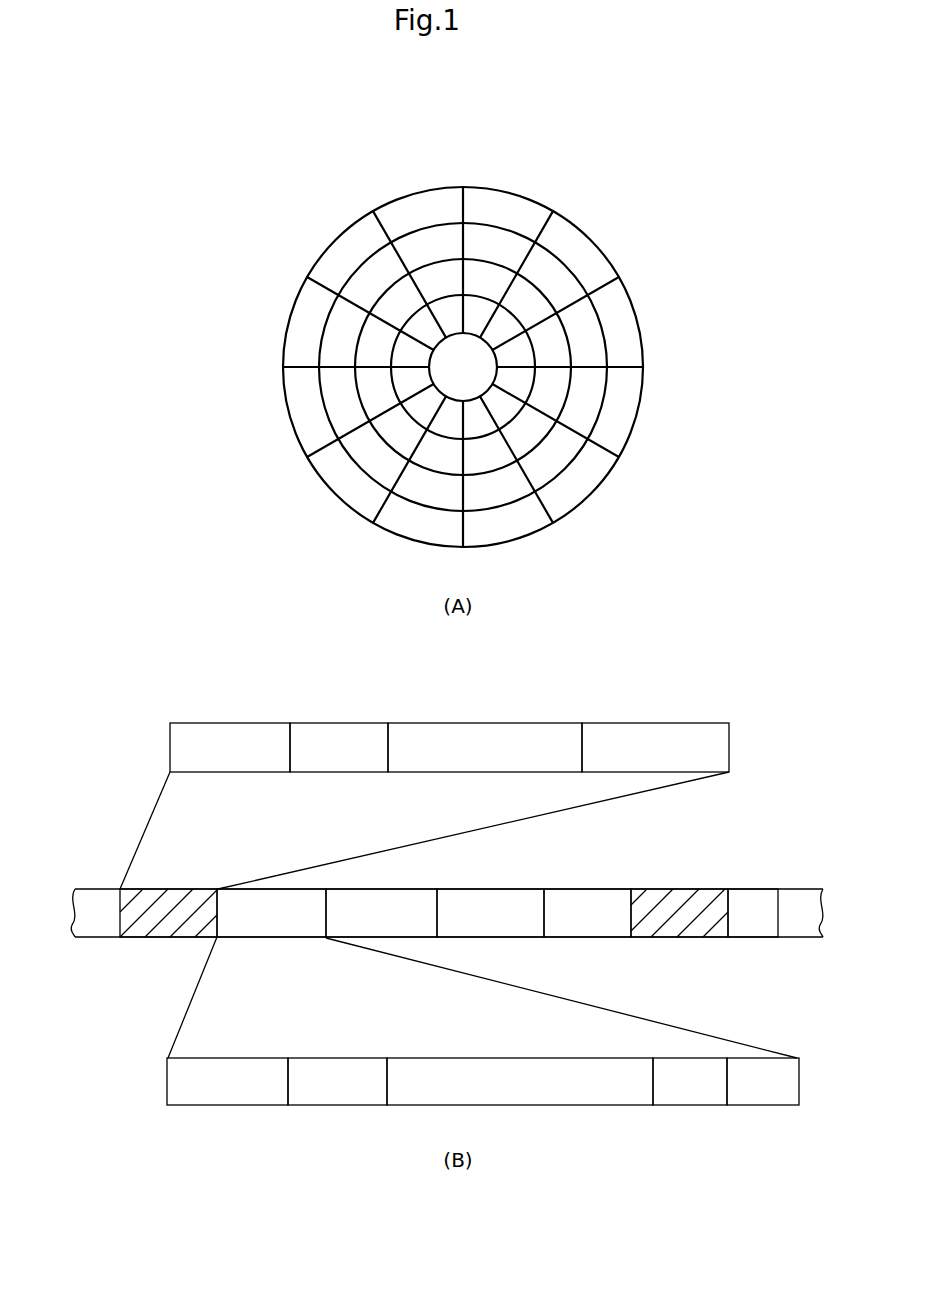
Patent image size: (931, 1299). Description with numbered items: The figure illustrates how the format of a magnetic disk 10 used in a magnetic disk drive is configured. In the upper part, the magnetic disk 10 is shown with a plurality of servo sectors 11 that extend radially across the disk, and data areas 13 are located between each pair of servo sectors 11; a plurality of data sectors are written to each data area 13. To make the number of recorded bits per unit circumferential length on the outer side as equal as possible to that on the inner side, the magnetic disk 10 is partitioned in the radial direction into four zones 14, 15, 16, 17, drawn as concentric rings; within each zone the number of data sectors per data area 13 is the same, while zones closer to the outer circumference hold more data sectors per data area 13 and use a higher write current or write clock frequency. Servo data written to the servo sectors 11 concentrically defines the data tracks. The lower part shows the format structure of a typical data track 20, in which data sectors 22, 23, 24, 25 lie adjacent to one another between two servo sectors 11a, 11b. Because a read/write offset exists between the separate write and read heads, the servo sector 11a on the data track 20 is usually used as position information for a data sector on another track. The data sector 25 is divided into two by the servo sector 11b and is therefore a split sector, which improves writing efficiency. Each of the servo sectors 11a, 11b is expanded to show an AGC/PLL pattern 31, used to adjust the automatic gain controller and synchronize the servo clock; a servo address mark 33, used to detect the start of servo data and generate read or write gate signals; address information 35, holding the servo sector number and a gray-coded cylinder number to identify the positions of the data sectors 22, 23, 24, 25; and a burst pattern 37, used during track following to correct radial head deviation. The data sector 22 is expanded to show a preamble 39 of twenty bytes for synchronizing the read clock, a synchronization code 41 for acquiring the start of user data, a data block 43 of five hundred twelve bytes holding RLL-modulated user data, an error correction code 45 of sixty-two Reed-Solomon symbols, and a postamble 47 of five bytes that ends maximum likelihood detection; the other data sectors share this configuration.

The magnetic disk 10 is at (623, 224).
The servo sector 11 is at (463, 207).
The servo sector 11a is at (155, 889).
The servo sector 11b is at (672, 889).
The data area 13 is at (462, 176).
The zone 14 is at (614, 320).
The zone 15 is at (588, 392).
The zone 16 is at (527, 430).
The zone 17 is at (477, 425).
The data track 20 is at (72, 867).
The data sector 22 is at (278, 889).
The data sector 23 is at (380, 889).
The data sector 24 is at (486, 889).
The data sector 25 is at (585, 889).
The AGC/PLL pattern 31 is at (225, 723).
The servo address mark (SAM) 33 is at (337, 723).
The address information 35 is at (478, 723).
The burst pattern 37 is at (647, 723).
The preamble 39 is at (218, 1058).
The synchronization code (SYNC) 41 is at (310, 1058).
The data block 43 is at (527, 1058).
The error correction code (ECC) 45 is at (667, 1058).
The postamble 47 is at (760, 1058).